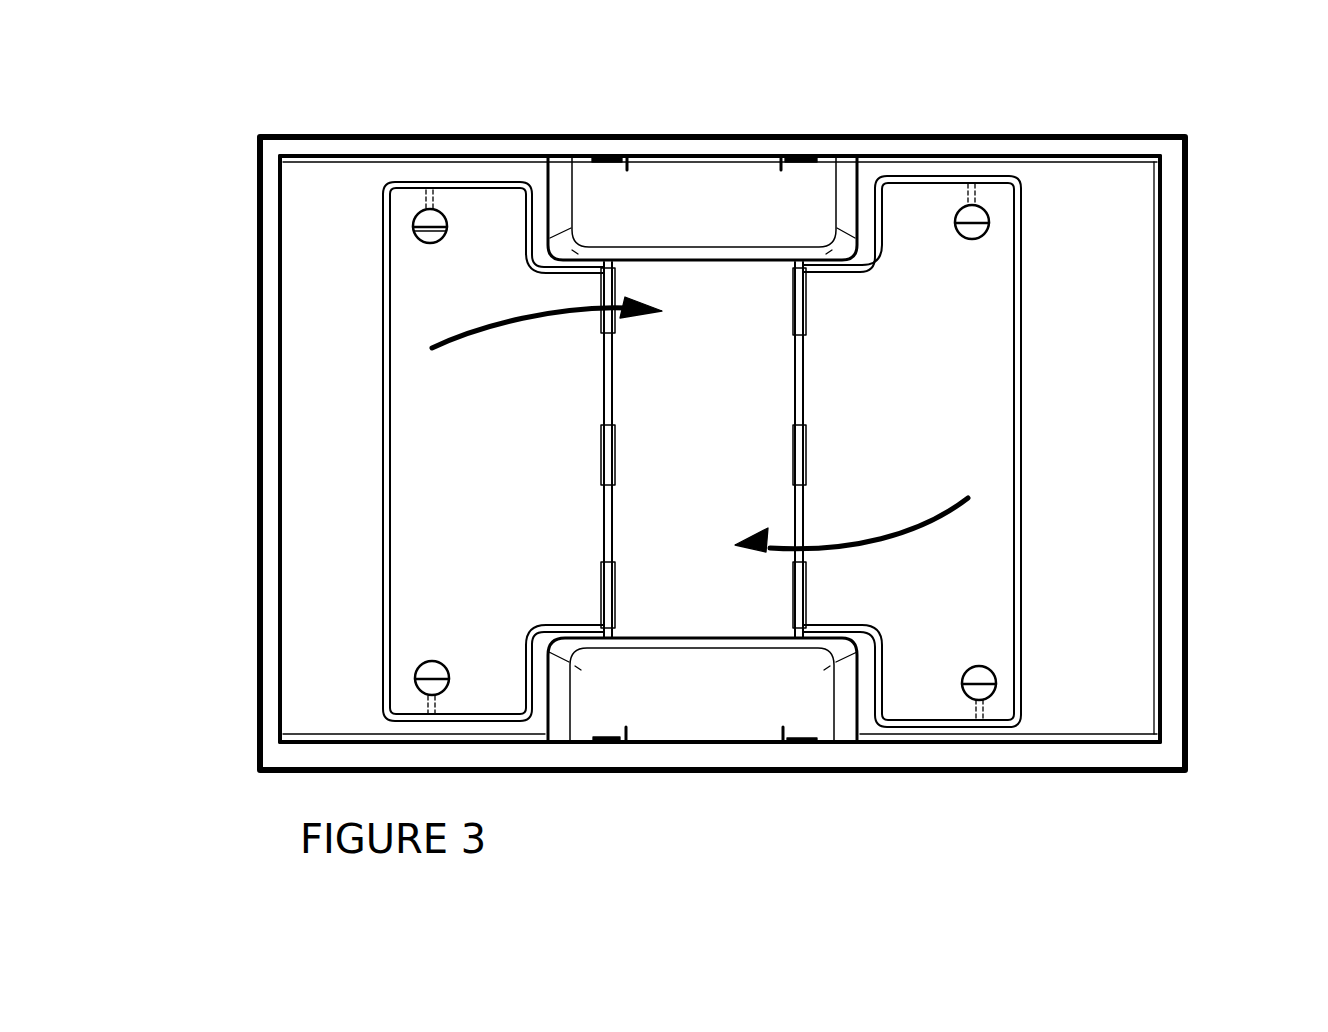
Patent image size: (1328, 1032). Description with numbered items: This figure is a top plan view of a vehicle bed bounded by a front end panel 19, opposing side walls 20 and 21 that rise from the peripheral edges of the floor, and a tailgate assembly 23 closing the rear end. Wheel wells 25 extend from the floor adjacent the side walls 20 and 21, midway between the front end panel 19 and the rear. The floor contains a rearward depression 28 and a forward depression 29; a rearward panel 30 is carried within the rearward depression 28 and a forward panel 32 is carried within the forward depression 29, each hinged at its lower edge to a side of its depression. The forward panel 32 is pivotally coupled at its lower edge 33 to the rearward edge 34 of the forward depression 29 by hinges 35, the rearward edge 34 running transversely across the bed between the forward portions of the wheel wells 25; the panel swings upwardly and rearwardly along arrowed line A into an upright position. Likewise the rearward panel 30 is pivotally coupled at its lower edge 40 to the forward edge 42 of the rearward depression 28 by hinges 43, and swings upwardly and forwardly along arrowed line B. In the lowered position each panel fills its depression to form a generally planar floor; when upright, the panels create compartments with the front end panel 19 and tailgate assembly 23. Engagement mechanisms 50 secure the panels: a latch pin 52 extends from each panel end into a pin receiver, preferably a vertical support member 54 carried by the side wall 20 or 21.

The front end panel 19 is at (1180, 403).
The side wall 20 is at (1085, 137).
The side wall 21 is at (1100, 764).
The tailgate assembly 23 is at (262, 385).
The wheel wells 25 is at (695, 192).
The rearward depression 28 is at (384, 182).
The forward depression 29 is at (878, 176).
The rearward panel 30 is at (493, 233).
The forward panel 32 is at (918, 218).
The lower edge 33 is at (805, 362).
The rearward edge 34 is at (797, 504).
The hinges 35 is at (797, 305).
The lower edge 40 is at (608, 397).
The forward edge 42 is at (615, 362).
The hinges 43 is at (613, 447).
The engagement mechanism 50 is at (416, 236).
The latch pin 52 is at (430, 205).
The vertical support member 54 is at (627, 170).
The arrowed line A is at (872, 538).
The arrowed line B is at (482, 333).